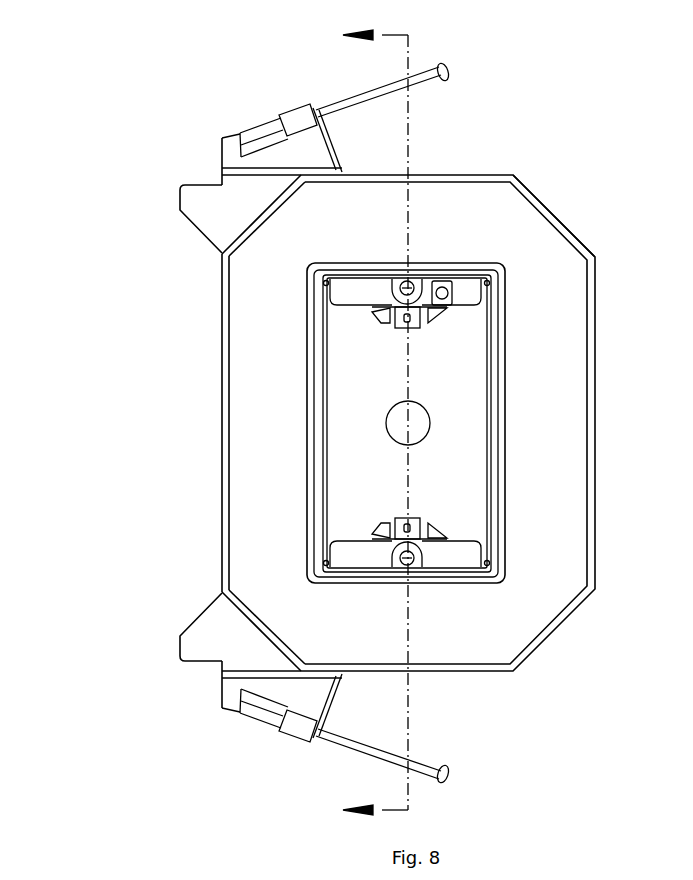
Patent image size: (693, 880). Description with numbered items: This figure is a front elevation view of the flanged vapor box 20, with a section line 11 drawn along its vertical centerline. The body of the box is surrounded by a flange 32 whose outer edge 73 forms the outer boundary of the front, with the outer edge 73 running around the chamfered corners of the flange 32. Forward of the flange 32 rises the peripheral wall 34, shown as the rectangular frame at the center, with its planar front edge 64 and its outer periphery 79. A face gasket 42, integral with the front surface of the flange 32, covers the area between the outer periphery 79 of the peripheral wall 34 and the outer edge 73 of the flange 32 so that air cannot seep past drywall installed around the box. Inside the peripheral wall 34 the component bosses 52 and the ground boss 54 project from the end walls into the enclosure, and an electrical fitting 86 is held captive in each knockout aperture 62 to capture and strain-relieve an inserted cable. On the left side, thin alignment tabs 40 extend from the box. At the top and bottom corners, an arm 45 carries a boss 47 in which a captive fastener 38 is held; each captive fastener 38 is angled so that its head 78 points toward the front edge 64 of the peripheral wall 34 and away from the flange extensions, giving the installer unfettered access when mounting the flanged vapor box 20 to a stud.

The section line 11 is at (375, 422).
The flanged vapor box 20 is at (147, 124).
The flange 32 is at (596, 257).
The peripheral wall 34 is at (455, 583).
The captive fasteners 38 is at (423, 85).
The alignment tabs 40 is at (178, 204).
The face gasket 42 is at (533, 341).
The arm 45 is at (315, 153).
The boss 47 is at (262, 124).
The component bosses 52 is at (403, 281).
The ground boss 54 is at (443, 282).
The knockout aperture 62 is at (445, 537).
The front edge 64 is at (499, 483).
The outer edge 73 is at (553, 212).
The heads 78 is at (452, 84).
The outer periphery 79 is at (299, 390).
The electrical fitting 86 is at (436, 322).